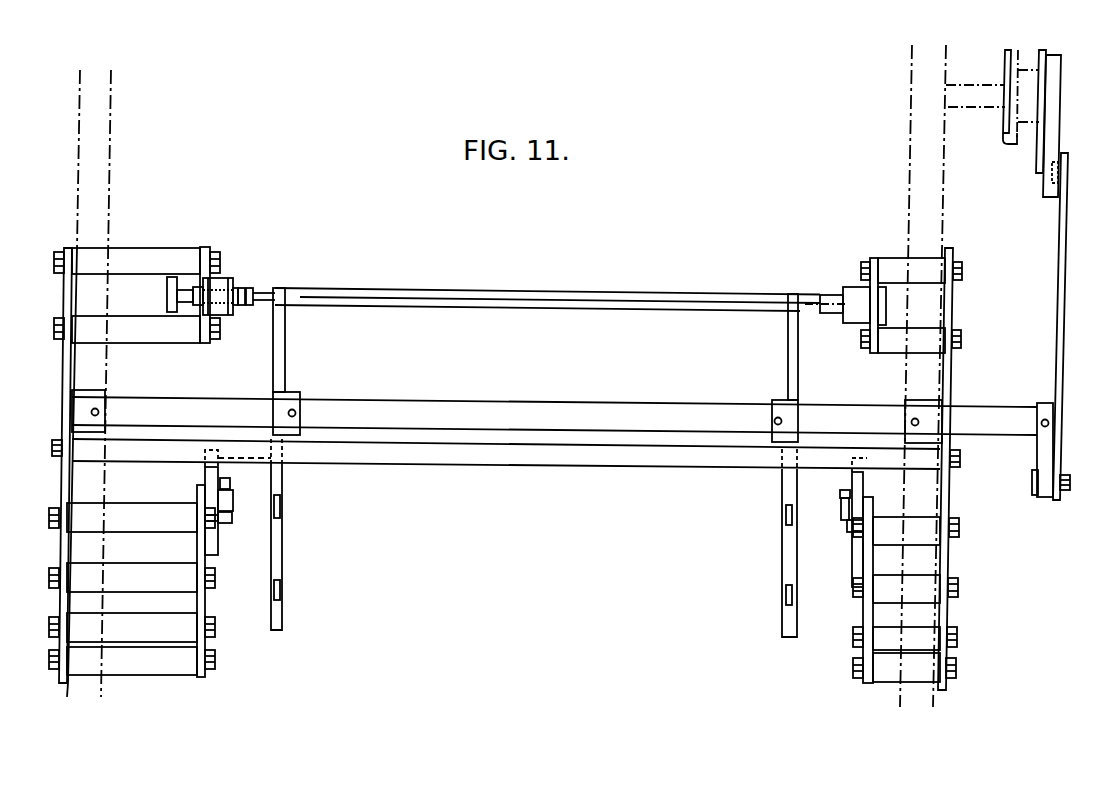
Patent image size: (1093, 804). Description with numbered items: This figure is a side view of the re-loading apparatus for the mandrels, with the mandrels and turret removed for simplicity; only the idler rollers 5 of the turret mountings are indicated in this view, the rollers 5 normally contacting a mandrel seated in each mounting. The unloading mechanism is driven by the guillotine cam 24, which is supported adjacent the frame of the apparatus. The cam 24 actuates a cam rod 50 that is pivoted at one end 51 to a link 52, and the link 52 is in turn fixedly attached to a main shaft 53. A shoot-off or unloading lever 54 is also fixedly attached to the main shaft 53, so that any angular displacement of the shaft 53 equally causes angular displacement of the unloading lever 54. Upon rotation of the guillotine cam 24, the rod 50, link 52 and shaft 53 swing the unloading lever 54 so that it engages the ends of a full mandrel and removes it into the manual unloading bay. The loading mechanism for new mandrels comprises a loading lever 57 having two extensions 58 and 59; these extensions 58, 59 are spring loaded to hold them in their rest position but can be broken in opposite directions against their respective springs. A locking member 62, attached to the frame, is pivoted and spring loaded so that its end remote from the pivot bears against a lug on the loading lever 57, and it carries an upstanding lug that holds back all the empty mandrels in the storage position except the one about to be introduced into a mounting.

The idler rollers 5 is at (499, 298).
The guillotine cam 24 is at (1052, 135).
The cam rod 50 is at (1059, 229).
The pivoted end 51 is at (1061, 498).
The link 52 is at (1043, 456).
The main shaft 53 is at (221, 410).
The unloading lever 54 is at (284, 365).
The loading lever 57 is at (283, 483).
The extension 58 is at (282, 550).
The extension 59 is at (280, 610).
The locking member 62 is at (208, 553).